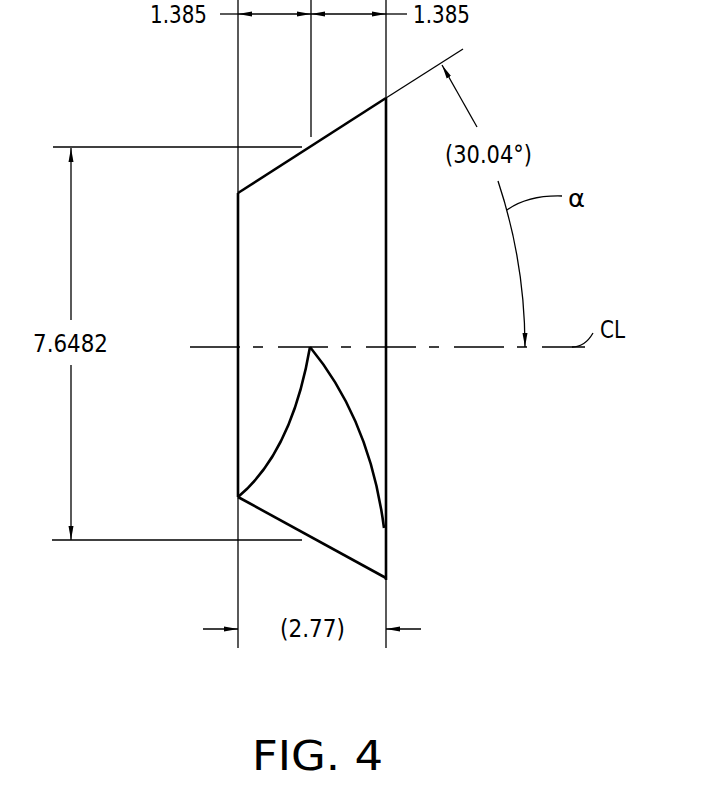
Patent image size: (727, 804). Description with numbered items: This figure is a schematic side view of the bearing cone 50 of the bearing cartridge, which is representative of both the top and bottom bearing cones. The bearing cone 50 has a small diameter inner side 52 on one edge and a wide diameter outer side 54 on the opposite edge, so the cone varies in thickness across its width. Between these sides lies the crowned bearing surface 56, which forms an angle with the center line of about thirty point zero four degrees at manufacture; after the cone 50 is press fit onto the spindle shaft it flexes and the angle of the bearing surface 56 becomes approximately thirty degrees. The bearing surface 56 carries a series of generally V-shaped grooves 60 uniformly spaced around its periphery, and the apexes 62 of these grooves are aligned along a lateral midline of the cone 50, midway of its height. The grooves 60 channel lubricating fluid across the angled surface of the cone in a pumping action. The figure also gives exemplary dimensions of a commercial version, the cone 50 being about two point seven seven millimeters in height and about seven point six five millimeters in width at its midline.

The bearing cone 50 is at (316, 339).
The small diameter inner side 52 is at (238, 402).
The wide diameter outer side 54 is at (435, 457).
The crowned bearing surface 56 is at (277, 165).
The V-shaped grooves 60 is at (355, 417).
The apexes of the grooves 62 is at (310, 347).